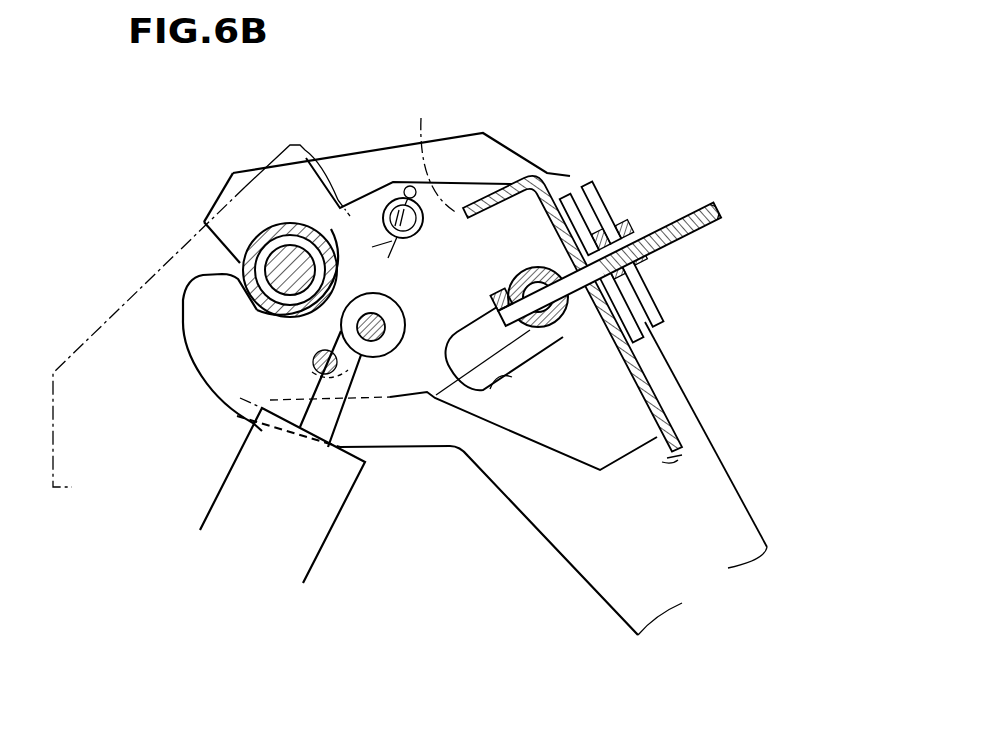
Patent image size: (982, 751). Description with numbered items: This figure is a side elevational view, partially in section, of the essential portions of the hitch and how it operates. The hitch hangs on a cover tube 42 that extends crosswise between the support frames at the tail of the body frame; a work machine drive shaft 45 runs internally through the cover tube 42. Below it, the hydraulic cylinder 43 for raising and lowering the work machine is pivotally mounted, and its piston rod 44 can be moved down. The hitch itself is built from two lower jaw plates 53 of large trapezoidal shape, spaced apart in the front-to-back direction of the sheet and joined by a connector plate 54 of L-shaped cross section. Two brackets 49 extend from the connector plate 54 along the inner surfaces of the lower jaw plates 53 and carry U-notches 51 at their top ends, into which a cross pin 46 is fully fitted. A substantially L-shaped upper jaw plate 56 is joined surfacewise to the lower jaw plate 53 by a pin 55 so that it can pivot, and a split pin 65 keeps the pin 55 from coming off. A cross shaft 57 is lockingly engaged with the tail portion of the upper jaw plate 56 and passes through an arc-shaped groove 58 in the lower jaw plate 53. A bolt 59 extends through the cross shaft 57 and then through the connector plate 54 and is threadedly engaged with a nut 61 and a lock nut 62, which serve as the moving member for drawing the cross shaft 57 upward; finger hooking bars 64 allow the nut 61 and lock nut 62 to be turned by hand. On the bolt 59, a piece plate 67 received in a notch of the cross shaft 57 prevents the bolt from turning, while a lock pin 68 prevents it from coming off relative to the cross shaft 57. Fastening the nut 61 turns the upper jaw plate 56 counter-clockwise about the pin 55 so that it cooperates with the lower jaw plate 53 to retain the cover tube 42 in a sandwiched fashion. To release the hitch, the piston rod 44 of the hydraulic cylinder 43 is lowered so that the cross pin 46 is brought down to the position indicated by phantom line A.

The cover tube 42 is at (275, 257).
The hydraulic cylinder 43 is at (213, 497).
The piston rod 44 is at (318, 368).
The work machine drive shaft 45 is at (262, 305).
The cross pin 46 is at (356, 330).
The phantom line A is at (240, 398).
The brackets 49 is at (537, 372).
The U-notches 51 is at (398, 450).
The lower jaw plates 53 is at (386, 428).
The connector plate 54 is at (682, 397).
The pin 55 is at (435, 207).
The upper jaw plates 56 is at (384, 161).
The cross shaft 57 is at (556, 330).
The arc-shaped grooves 58 is at (497, 377).
The bolt 59 is at (706, 220).
The nut 61 is at (600, 222).
The lock nut 62 is at (630, 220).
The finger hooking bars 64 is at (598, 188).
The split pin 65 is at (410, 187).
The piece plate 67 is at (453, 378).
The lock pin 68 is at (588, 330).